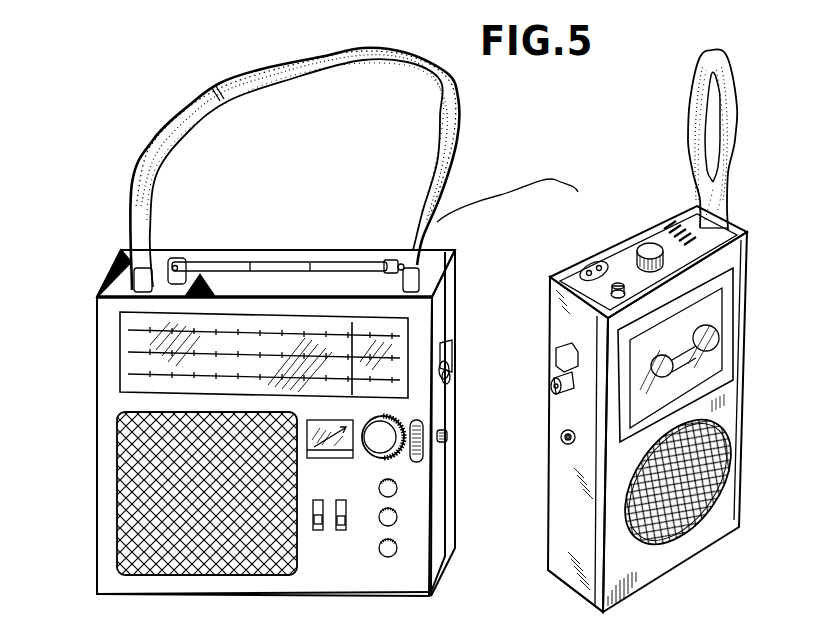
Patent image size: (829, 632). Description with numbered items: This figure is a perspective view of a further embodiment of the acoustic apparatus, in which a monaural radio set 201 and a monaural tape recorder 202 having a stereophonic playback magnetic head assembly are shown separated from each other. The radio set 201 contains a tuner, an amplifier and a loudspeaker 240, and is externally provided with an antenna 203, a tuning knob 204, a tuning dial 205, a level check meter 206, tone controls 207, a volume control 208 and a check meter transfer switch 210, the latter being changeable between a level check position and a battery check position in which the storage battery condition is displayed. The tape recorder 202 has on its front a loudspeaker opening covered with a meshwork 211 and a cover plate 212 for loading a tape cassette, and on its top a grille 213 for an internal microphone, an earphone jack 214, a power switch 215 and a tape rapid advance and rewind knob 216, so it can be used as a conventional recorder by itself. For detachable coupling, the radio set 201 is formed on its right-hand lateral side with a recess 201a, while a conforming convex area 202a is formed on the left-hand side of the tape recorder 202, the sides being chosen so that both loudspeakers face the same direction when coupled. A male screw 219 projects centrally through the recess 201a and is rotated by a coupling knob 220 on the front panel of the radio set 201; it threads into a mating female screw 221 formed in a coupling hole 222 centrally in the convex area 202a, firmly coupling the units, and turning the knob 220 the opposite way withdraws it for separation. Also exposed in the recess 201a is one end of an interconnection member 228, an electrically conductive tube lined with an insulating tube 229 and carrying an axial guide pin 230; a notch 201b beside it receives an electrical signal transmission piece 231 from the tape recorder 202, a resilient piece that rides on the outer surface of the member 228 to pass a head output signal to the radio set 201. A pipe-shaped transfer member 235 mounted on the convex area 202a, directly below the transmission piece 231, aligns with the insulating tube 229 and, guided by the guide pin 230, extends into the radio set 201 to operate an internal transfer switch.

The monaural radio set 201 is at (92, 520).
The recess 201a is at (441, 588).
The notch 201b is at (463, 306).
The monaural tape recorder 202 is at (683, 568).
The convex area 202a is at (566, 576).
The antenna 203 is at (304, 261).
The tuning knob 204 is at (379, 459).
The tuning dial 205 is at (128, 358).
The level check meter 206 is at (353, 445).
The tone controls 207 is at (396, 520).
The volume control 208 is at (388, 558).
The check meter transfer switch 210 is at (336, 522).
The meshwork 211 is at (701, 512).
The cover plate 212 is at (720, 332).
The grille 213 is at (676, 226).
The earphone jack 214 is at (590, 268).
The power switch 215 is at (620, 282).
The tape rapid advance and rewind knob 216 is at (645, 244).
The male screw 219 is at (448, 440).
The coupling knob 220 is at (421, 447).
The female screw 221 is at (562, 445).
The coupling hole 222 is at (566, 448).
The interconnection member 228 is at (446, 361).
The insulating tube 229 is at (449, 371).
The guide pin 230 is at (450, 383).
The electrical signal transmission piece 231 is at (556, 364).
The transfer member 235 is at (562, 393).
The loudspeaker 240 is at (130, 573).